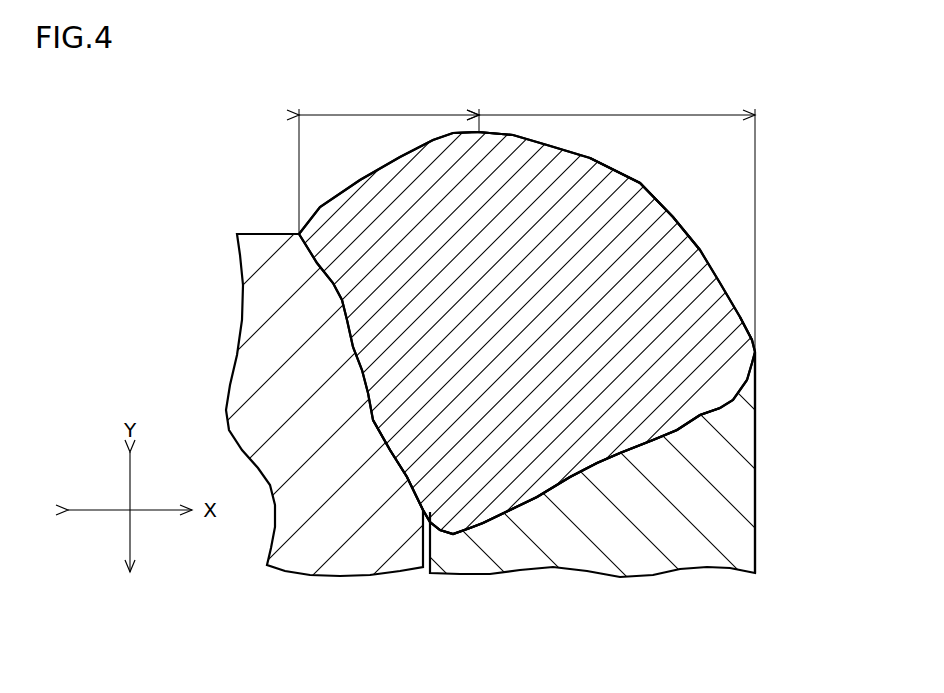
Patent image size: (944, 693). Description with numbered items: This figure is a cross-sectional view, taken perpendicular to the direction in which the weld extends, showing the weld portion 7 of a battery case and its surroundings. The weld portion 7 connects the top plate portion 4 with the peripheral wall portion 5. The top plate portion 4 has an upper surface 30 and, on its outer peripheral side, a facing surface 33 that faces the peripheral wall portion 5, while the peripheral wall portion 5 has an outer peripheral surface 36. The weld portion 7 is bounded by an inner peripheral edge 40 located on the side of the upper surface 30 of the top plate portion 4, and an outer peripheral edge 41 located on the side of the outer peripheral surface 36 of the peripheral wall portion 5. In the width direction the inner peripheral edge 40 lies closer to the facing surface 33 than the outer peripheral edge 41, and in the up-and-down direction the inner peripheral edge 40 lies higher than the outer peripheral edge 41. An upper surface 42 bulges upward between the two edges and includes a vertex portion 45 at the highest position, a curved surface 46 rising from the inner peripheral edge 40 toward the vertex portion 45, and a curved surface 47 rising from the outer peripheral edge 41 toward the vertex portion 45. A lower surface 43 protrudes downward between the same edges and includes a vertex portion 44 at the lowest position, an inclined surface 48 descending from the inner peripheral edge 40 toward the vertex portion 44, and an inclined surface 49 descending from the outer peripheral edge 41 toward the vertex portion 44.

The top plate portion 4 is at (265, 291).
The peripheral wall portion 5 is at (752, 428).
The weld portion 7 is at (524, 97).
The upper surface 30 is at (258, 233).
The facing surface 33 is at (428, 505).
The outer peripheral surface 36 is at (752, 538).
The inner peripheral edge 40 is at (298, 230).
The outer peripheral edge 41 is at (752, 357).
The upper surface 42 is at (592, 158).
The lower surface 43 is at (323, 628).
The vertex portion 44 is at (453, 533).
The vertex portion 45 is at (475, 130).
The curved surface 46 is at (402, 157).
The curved surface 47 is at (642, 183).
The inclined surface 48 is at (402, 473).
The inclined surface 49 is at (538, 497).